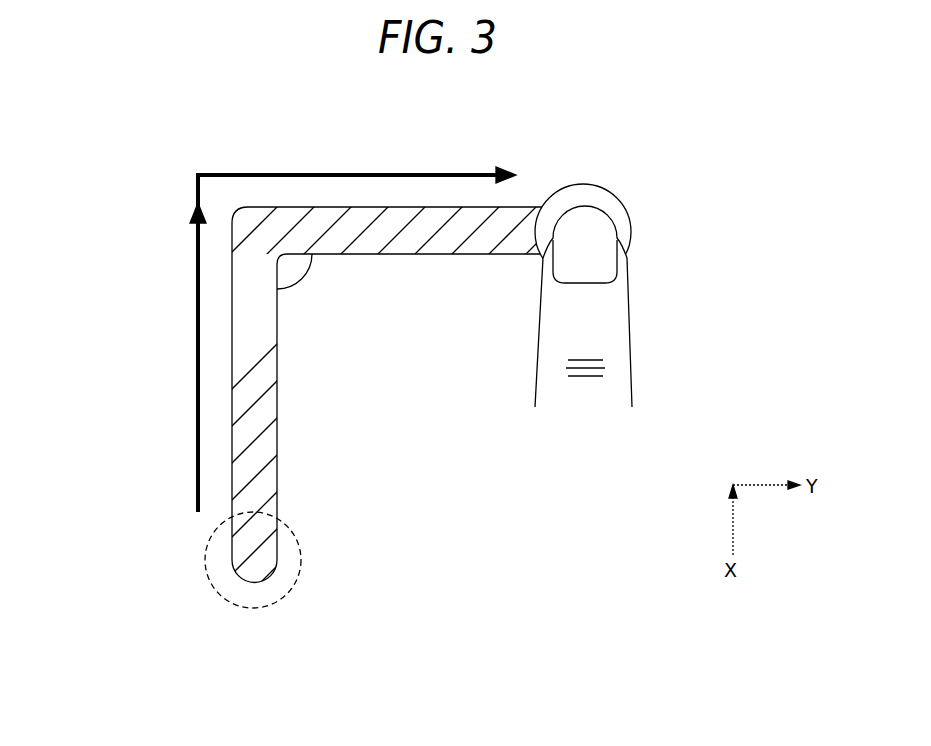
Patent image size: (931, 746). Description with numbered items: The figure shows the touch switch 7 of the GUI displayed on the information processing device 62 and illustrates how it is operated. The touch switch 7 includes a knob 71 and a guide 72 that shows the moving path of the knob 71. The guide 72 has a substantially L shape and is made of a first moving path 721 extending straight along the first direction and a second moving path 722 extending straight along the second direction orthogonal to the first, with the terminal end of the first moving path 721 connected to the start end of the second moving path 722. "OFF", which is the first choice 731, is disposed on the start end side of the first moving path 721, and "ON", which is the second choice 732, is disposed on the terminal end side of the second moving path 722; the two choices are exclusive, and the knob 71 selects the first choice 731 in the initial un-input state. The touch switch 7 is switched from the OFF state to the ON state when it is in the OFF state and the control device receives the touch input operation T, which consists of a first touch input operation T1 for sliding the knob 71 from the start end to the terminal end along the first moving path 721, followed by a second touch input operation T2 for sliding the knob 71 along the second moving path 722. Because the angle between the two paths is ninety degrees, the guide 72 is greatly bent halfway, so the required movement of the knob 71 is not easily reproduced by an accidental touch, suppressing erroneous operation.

The operation input device 62 is at (83, 109).
The touch input operation T is at (250, 118).
The first touch input operation T1 is at (197, 243).
The second touch input operation T2 is at (240, 172).
The touch switch 7 is at (397, 153).
The knob 71 is at (612, 213).
The guide 72 is at (392, 257).
The first moving path 721 is at (258, 387).
The second moving path 722 is at (487, 232).
The first choice 731 is at (155, 582).
The second choice 732 is at (620, 153).